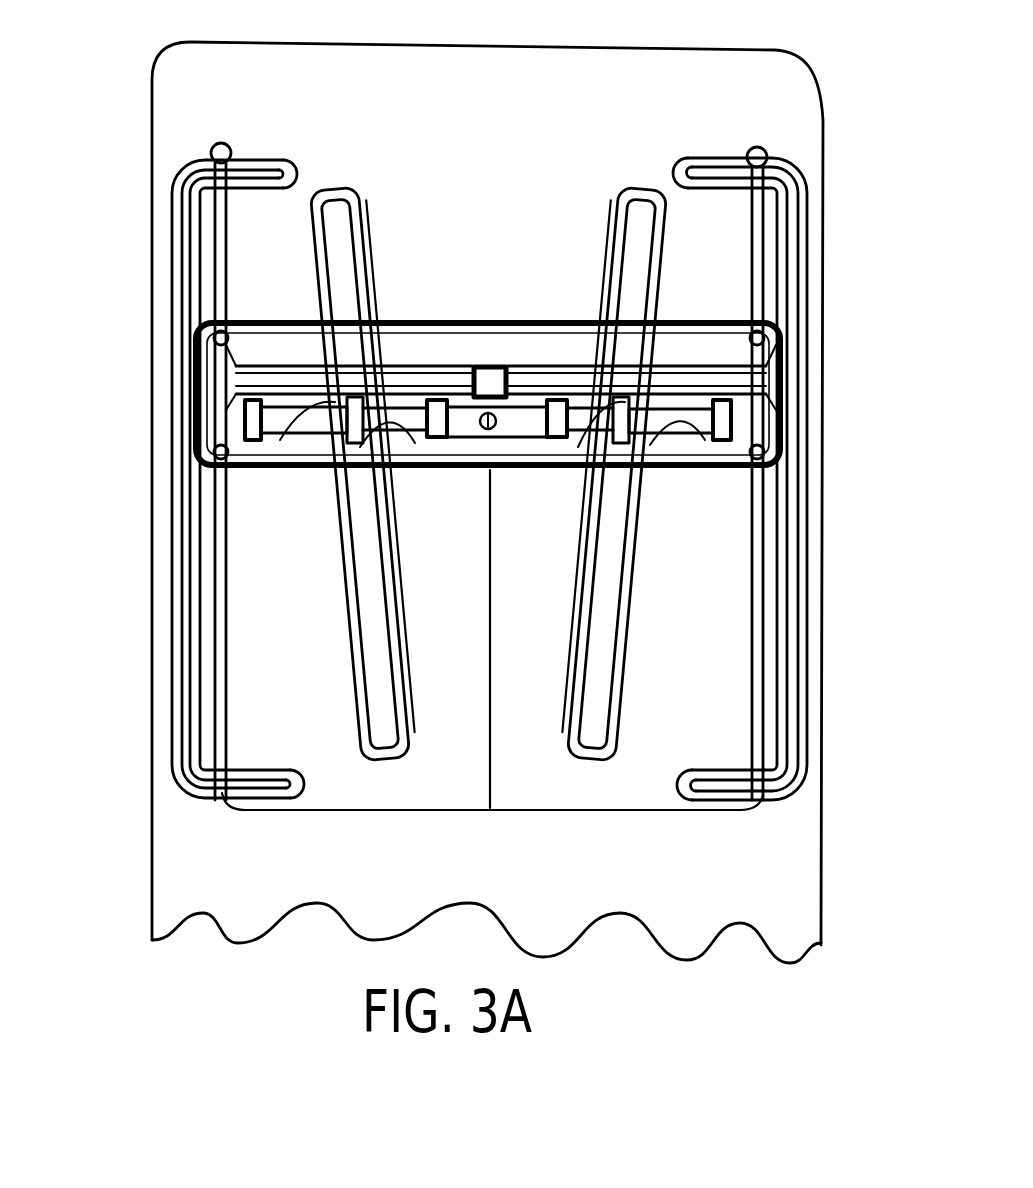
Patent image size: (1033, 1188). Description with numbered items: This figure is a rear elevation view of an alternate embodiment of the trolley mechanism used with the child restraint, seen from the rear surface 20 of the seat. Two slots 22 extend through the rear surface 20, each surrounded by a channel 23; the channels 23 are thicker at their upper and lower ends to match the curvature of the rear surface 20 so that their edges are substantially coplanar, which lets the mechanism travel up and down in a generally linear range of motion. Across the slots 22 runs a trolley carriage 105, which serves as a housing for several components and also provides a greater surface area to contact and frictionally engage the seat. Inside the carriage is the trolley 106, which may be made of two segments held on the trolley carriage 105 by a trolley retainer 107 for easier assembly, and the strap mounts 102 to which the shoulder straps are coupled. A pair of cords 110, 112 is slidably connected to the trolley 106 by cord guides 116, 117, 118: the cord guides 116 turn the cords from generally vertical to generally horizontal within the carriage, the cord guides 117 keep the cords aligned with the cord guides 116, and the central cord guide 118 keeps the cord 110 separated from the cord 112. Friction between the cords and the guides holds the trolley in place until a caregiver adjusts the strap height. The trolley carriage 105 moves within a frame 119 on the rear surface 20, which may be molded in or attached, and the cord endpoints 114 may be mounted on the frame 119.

The rear surface 20 is at (385, 150).
The slots 22 is at (350, 270).
The channels 23 is at (363, 213).
The strap mounts 102 is at (405, 470).
The trolley carriage 105 is at (460, 320).
The trolley 106 is at (690, 473).
The trolley retainer 107 is at (503, 477).
The cord 110 is at (228, 262).
The cord 112 is at (748, 257).
The cord endpoints 114 is at (230, 147).
The cord guides 116 is at (190, 383).
The cord guides 117 is at (262, 312).
The cord guide 118 is at (490, 366).
The frame 119 is at (178, 723).